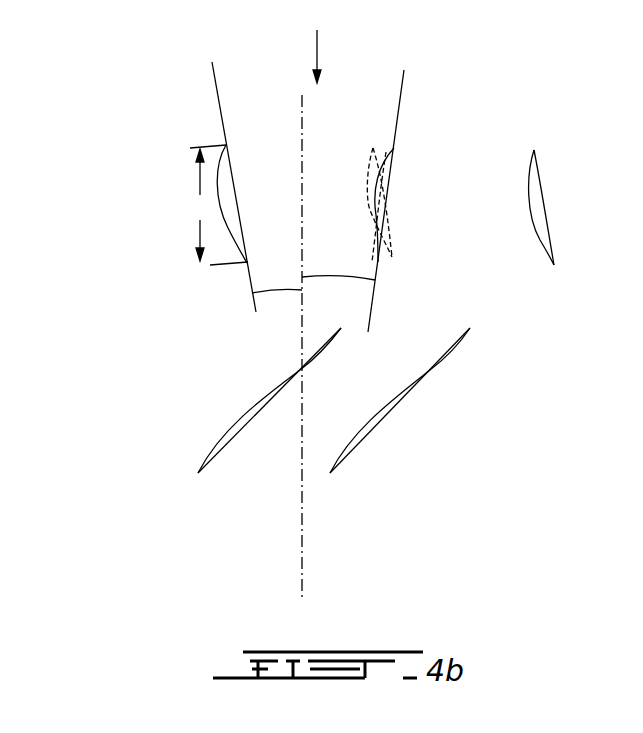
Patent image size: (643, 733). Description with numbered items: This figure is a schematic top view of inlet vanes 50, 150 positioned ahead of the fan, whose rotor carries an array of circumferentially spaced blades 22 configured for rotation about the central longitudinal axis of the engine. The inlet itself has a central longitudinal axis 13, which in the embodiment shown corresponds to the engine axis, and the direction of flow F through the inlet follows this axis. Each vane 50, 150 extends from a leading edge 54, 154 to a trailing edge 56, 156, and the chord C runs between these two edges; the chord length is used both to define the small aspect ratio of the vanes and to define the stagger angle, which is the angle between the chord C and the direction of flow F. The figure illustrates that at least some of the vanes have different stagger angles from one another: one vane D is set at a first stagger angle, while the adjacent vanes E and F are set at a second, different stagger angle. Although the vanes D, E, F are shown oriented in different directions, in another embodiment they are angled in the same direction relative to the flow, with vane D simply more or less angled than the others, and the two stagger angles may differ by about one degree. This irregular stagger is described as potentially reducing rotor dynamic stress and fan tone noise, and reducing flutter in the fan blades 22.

The central longitudinal axis 13 is at (302, 570).
The blades 22 is at (442, 362).
The vane 50 is at (558, 174).
The vane 150 is at (532, 148).
The leading edge 54 is at (172, 206).
The leading edge 154 is at (172, 206).
The trailing edge 56 is at (172, 206).
The trailing edge 156 is at (226, 145).
The direction of flow F is at (324, 56).
The vane E is at (227, 144).
The vane D is at (392, 158).
The chord C is at (219, 205).